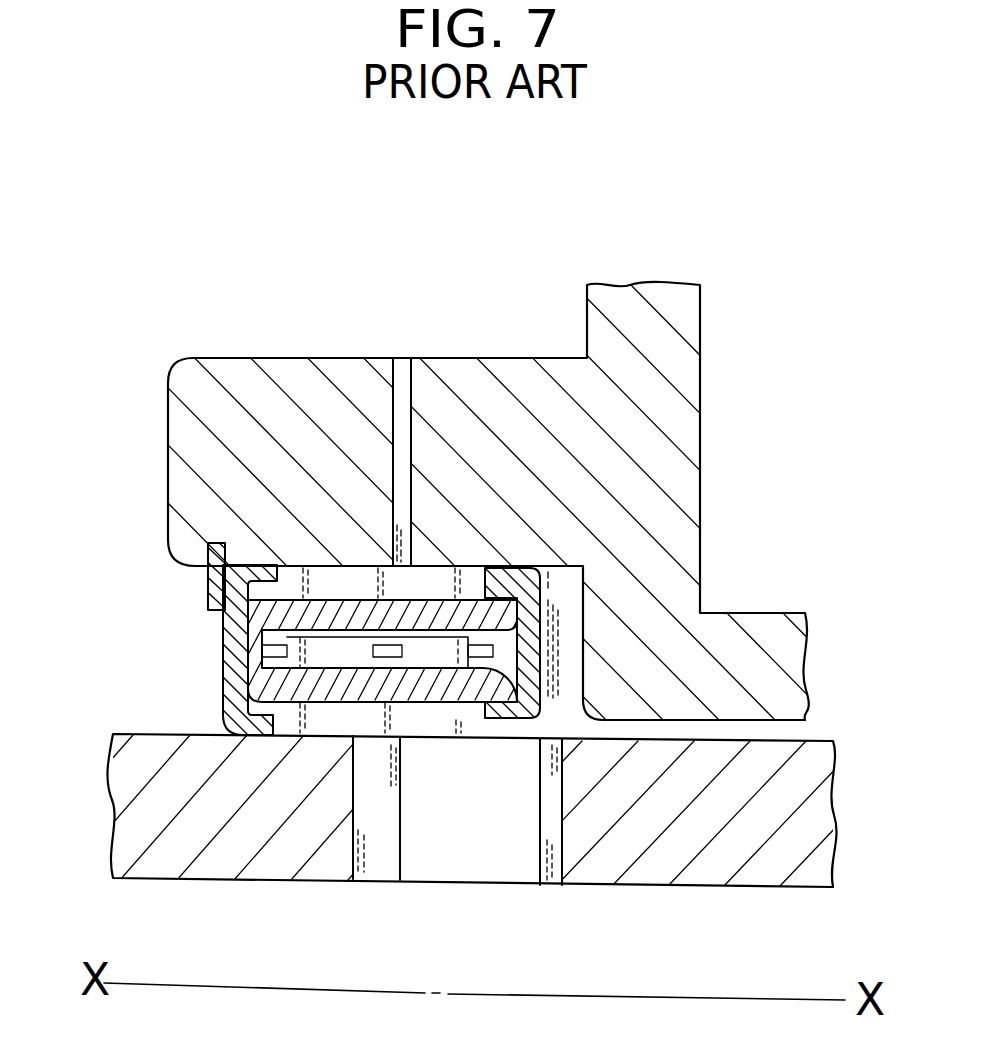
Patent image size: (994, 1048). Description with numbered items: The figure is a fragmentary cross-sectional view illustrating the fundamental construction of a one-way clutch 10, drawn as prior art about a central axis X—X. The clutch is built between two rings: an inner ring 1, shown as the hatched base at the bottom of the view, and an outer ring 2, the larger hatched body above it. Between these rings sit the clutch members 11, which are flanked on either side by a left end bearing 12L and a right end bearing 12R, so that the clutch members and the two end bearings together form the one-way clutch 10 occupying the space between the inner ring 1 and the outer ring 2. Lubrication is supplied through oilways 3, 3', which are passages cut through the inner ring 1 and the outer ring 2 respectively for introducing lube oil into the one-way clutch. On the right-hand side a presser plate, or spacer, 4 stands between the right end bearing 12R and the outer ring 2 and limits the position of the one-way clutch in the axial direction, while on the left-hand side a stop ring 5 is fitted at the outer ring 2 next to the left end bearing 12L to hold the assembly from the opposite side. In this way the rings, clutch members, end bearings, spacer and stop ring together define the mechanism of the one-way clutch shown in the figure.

The inner ring 1 is at (226, 860).
The outer ring 2 is at (688, 386).
The oilway 3 is at (376, 851).
The oilway 3' is at (418, 405).
The presser plate (spacer) 4 is at (565, 668).
The stop ring 5 is at (207, 572).
The one-way clutch 10 is at (222, 663).
The clutch members 11 is at (413, 605).
The left end bearing 12L is at (232, 630).
The right end bearing 12R is at (537, 620).